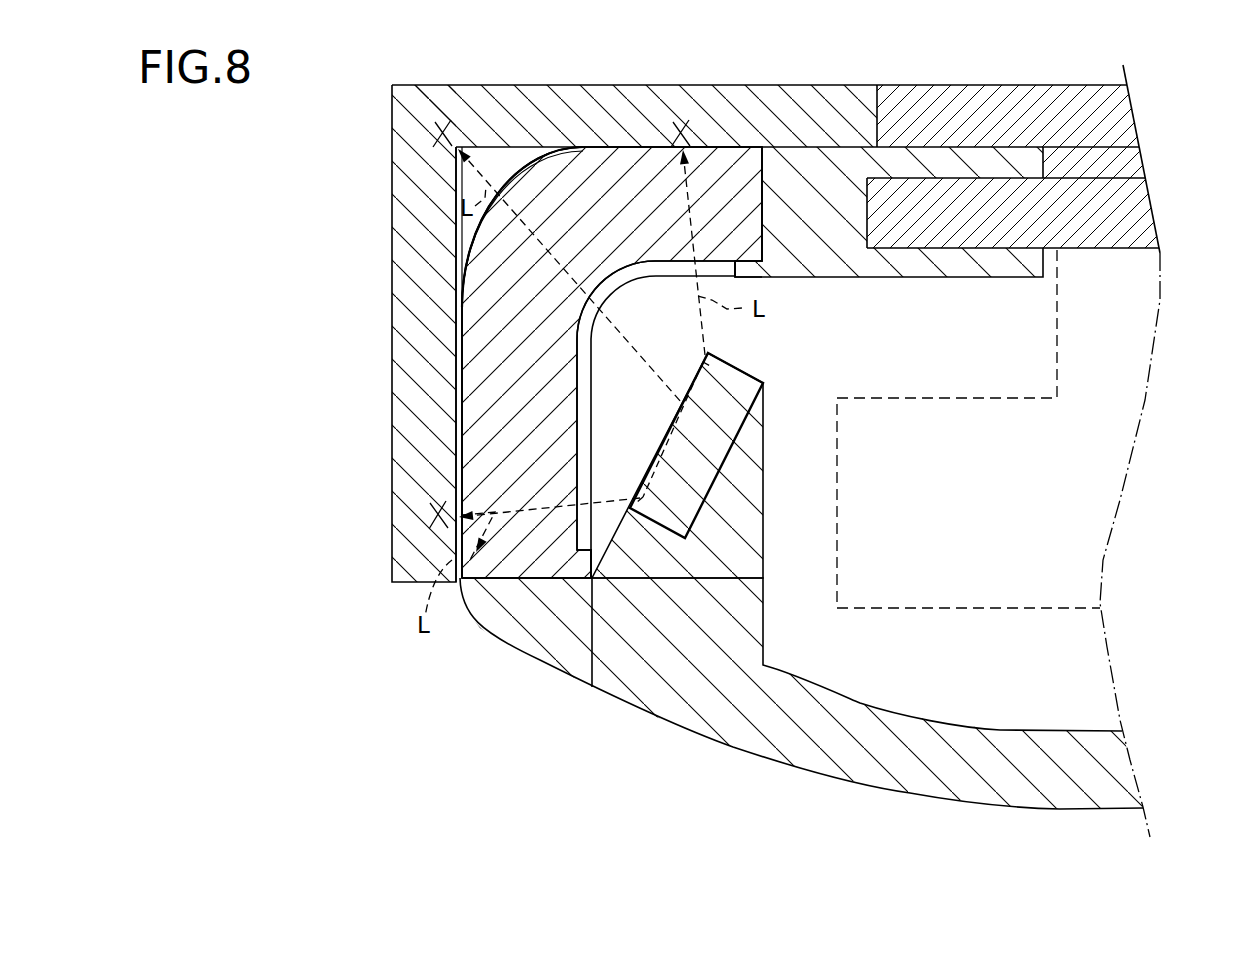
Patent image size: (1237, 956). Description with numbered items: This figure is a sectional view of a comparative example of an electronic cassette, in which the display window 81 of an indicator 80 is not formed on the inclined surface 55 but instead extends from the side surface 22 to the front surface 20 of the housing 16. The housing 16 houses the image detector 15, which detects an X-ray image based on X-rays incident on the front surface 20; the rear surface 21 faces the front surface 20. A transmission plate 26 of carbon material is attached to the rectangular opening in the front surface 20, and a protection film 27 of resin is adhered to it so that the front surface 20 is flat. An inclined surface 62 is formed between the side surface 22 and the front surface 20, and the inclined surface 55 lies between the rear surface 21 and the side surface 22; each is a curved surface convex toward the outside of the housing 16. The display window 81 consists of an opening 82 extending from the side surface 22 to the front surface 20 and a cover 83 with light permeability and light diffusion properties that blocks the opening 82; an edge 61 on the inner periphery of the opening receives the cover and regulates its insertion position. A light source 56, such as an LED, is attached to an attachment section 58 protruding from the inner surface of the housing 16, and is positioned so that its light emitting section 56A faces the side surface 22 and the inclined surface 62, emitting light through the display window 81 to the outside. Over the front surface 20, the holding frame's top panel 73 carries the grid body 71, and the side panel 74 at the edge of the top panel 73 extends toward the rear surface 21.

The image detector 15 is at (1035, 398).
The housing 16 is at (532, 683).
The front surface 20 is at (1098, 142).
The rear surface 21 is at (1145, 828).
The side surface 22 is at (455, 335).
The transmission plate 26 is at (1145, 214).
The protection film 27 is at (1145, 160).
The inclined surface 55 is at (663, 720).
The light source 56 is at (750, 372).
The light emitting section 56A is at (663, 443).
The attachment section 58 is at (762, 497).
The edge 61 is at (752, 270).
The inclined surface 62 is at (545, 160).
The grid body 71 is at (1113, 100).
The top panel 73 is at (563, 108).
The side panel 74 is at (391, 229).
The indicator 80 is at (362, 513).
The display window 81 is at (343, 394).
The opening 82 is at (590, 460).
The cover 83 is at (480, 400).